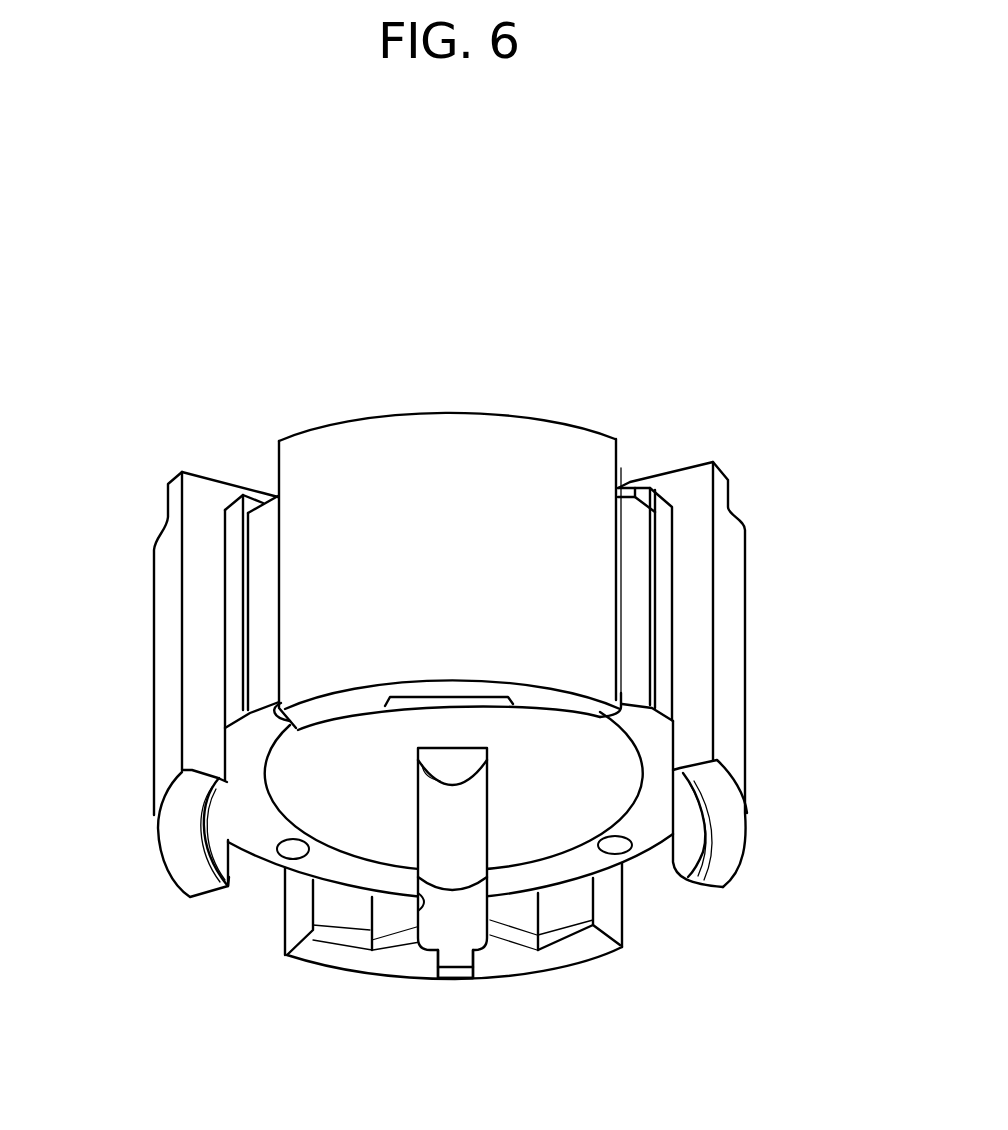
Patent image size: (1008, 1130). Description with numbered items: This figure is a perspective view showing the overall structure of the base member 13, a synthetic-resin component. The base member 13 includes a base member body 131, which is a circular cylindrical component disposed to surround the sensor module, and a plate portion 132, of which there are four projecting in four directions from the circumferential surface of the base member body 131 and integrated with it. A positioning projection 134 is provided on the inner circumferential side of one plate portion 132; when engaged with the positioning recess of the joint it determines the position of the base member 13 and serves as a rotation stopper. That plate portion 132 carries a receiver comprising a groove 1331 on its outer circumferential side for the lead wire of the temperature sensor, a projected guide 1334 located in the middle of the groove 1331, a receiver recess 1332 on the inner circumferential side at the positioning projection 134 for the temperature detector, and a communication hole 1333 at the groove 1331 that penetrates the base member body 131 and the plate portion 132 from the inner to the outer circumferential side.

The base member 13 is at (692, 364).
The base member body 131 is at (260, 562).
The plate portion 132 is at (173, 667).
The groove 1331 is at (422, 765).
The receiver recess 1332 is at (420, 894).
The communication hole 1333 is at (438, 835).
The projected guide 1334 is at (435, 797).
The positioning projection 134 is at (512, 913).